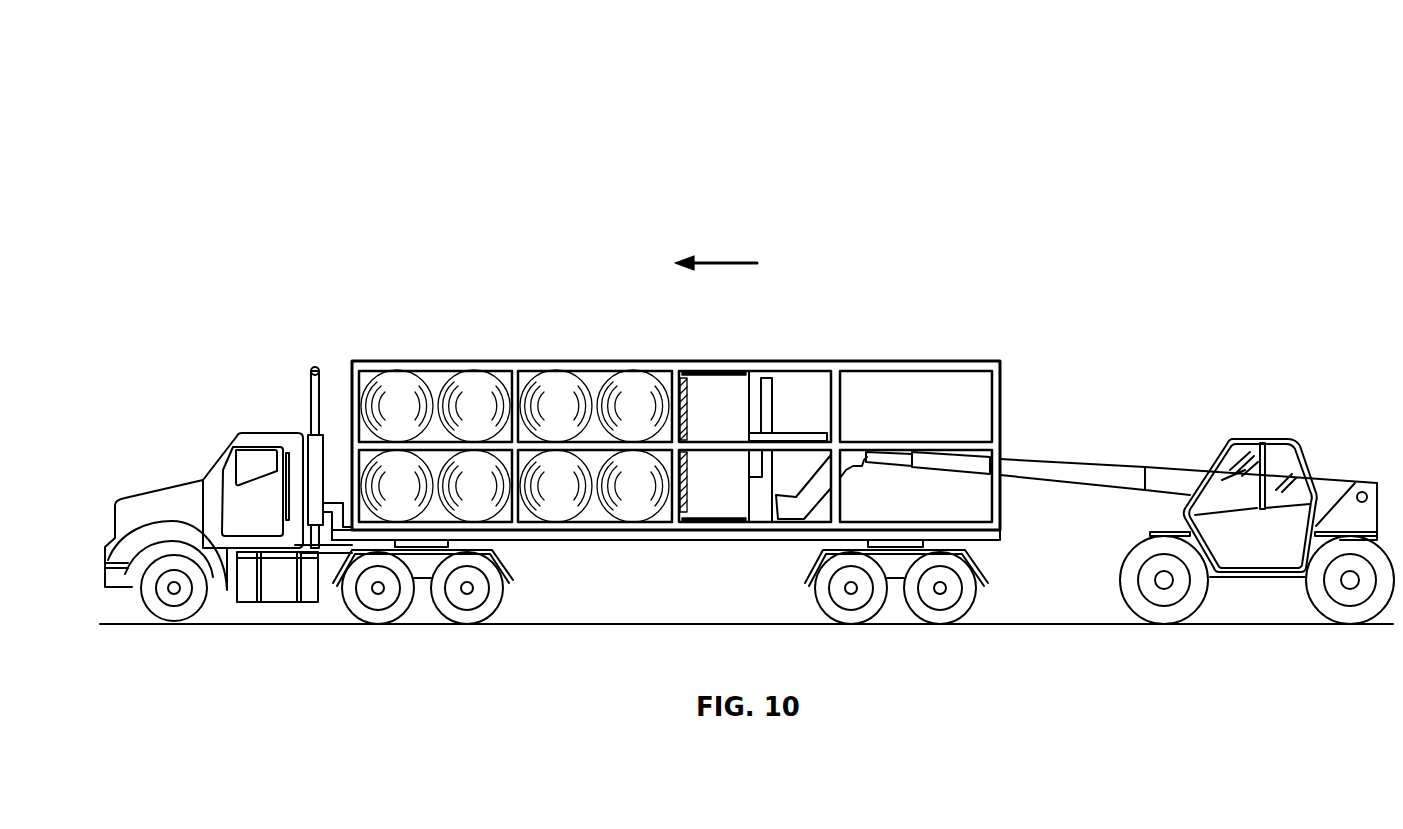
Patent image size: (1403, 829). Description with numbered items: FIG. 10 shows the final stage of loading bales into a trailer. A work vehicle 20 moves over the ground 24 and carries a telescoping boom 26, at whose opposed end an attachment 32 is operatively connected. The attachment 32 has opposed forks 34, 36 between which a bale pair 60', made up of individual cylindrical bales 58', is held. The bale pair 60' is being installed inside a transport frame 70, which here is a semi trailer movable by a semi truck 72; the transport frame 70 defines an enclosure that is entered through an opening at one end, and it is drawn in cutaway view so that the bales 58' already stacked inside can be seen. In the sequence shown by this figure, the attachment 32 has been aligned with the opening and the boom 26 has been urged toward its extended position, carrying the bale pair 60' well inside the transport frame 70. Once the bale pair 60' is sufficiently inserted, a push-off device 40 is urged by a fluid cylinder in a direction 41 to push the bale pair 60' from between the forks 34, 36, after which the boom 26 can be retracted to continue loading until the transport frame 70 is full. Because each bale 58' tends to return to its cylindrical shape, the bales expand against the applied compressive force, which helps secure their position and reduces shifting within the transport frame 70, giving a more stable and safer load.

The work vehicle 20 is at (1272, 418).
The ground 24 is at (1030, 622).
The boom 26 is at (1095, 463).
The attachment 32 is at (786, 392).
The fork 34 is at (722, 514).
The fork 36 is at (703, 377).
The push-off device 40 is at (692, 430).
The direction 41 is at (720, 262).
The bale 58' is at (518, 448).
The bale pair 60' is at (597, 479).
The transport frame 70 is at (430, 362).
The semi truck 72 is at (263, 430).